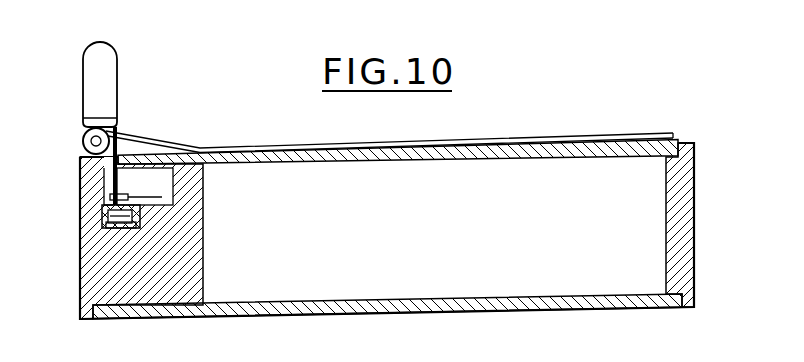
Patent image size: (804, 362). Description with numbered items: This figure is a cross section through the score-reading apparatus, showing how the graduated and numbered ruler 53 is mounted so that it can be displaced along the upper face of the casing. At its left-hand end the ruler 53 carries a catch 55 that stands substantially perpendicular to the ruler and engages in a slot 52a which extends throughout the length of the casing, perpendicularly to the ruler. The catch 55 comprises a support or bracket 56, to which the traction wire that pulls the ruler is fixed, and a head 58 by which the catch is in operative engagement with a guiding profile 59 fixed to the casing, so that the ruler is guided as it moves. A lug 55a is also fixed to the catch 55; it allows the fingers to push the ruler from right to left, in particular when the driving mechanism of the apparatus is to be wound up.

The lug 55a is at (99, 52).
The slot 52a is at (122, 150).
The graduated and numbered ruler 53 is at (274, 155).
The catch 55 is at (112, 181).
The support or bracket 56 is at (150, 150).
The head 58 is at (103, 220).
The guiding profile 59 is at (96, 229).